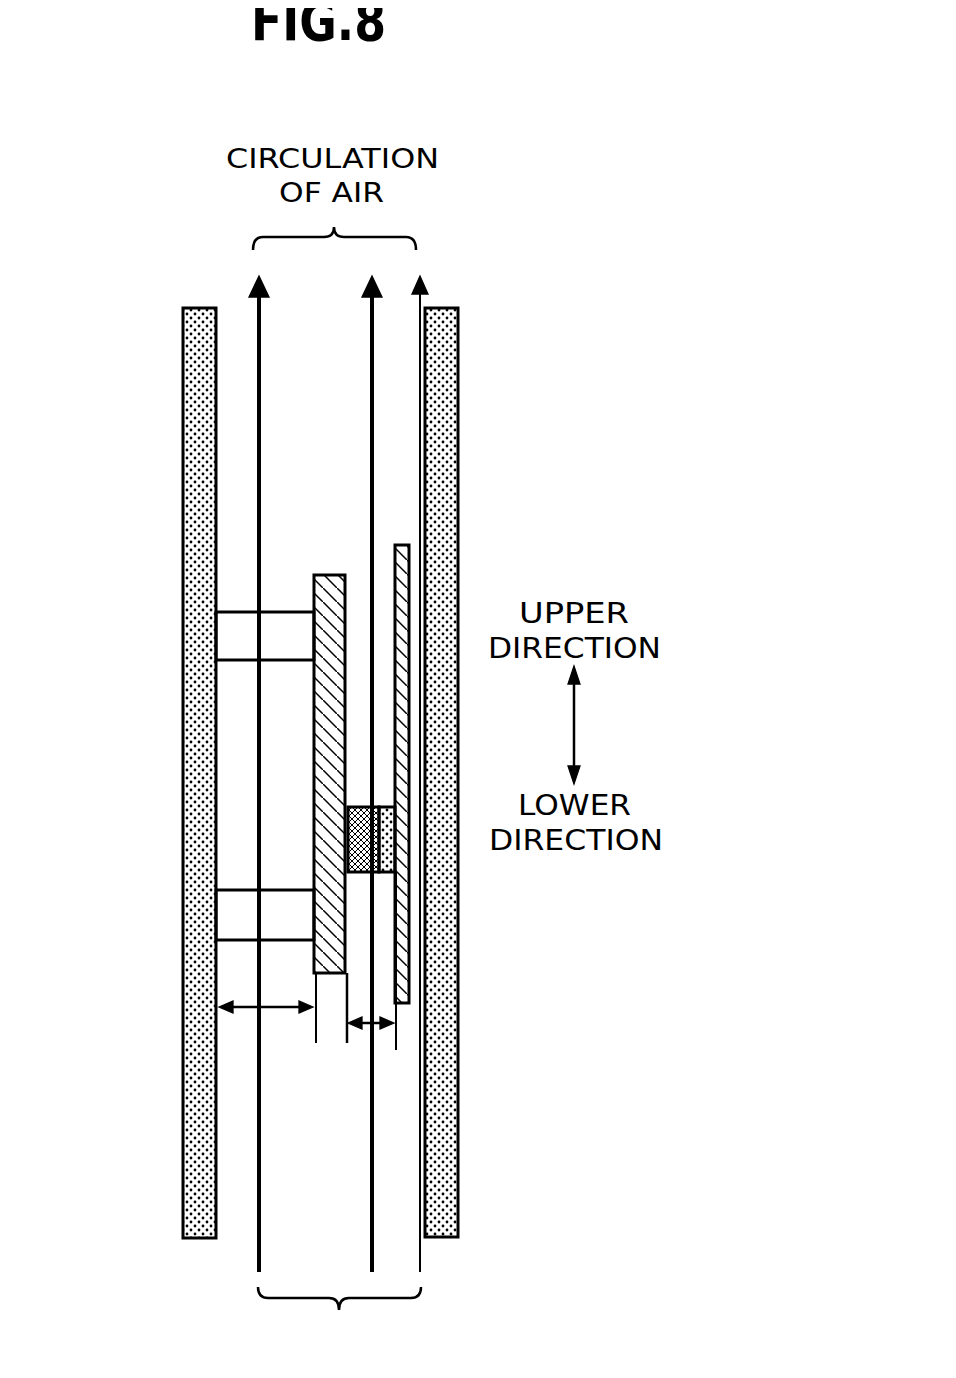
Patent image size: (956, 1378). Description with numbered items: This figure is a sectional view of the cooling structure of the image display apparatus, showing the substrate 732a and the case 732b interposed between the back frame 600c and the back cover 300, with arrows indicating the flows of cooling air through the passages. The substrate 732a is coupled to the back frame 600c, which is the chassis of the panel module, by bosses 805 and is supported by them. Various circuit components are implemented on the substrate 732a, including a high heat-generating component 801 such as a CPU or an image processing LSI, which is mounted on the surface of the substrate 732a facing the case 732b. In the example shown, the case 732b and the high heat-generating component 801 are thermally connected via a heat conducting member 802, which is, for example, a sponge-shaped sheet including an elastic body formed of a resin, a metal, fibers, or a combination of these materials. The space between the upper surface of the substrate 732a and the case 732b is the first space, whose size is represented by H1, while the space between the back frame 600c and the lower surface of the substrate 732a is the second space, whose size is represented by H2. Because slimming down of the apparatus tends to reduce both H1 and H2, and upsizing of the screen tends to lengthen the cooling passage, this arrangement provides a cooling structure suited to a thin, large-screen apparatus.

The back frame 600c is at (212, 310).
The back cover 300 is at (423, 310).
The substrate 732a is at (327, 628).
The case 732b is at (403, 563).
The bosses 805 is at (233, 642).
The high heat-generating component 801 is at (347, 817).
The heat conducting member 802 is at (383, 852).
The size of the first space H1 is at (380, 1025).
The size of the second space H2 is at (250, 1008).